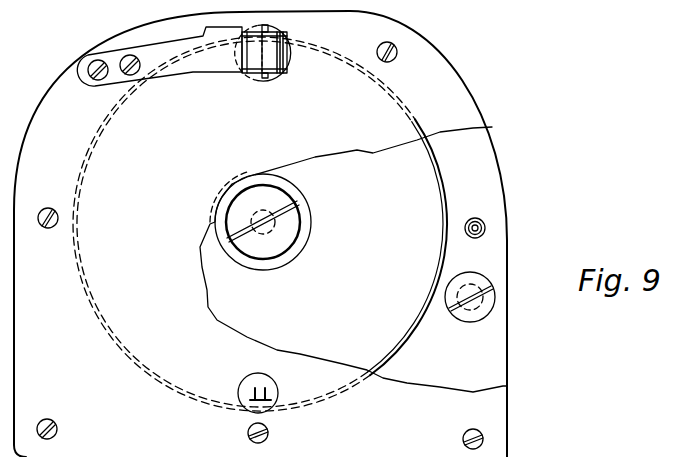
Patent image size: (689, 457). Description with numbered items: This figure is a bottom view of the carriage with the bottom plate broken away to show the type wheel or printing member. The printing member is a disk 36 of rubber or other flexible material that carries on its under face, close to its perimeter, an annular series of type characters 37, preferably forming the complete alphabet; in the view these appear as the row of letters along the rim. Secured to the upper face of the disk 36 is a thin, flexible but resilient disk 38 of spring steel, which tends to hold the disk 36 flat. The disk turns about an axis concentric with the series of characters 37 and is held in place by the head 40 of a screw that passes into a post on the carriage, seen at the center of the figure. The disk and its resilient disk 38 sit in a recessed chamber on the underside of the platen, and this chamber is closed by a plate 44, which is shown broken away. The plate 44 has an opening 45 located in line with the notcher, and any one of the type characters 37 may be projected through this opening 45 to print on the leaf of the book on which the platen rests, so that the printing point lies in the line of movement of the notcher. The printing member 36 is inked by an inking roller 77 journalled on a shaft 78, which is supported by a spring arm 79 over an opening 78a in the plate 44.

The disk 36 is at (442, 245).
The type characters 37 is at (400, 346).
The resilient disk 38 is at (245, 266).
The head 40 is at (274, 257).
The plate 44 is at (321, 153).
The opening 45 is at (243, 387).
The inking roller 77 is at (290, 56).
The shaft 78 is at (274, 80).
The opening 78a is at (292, 47).
The spring arm 79 is at (196, 73).